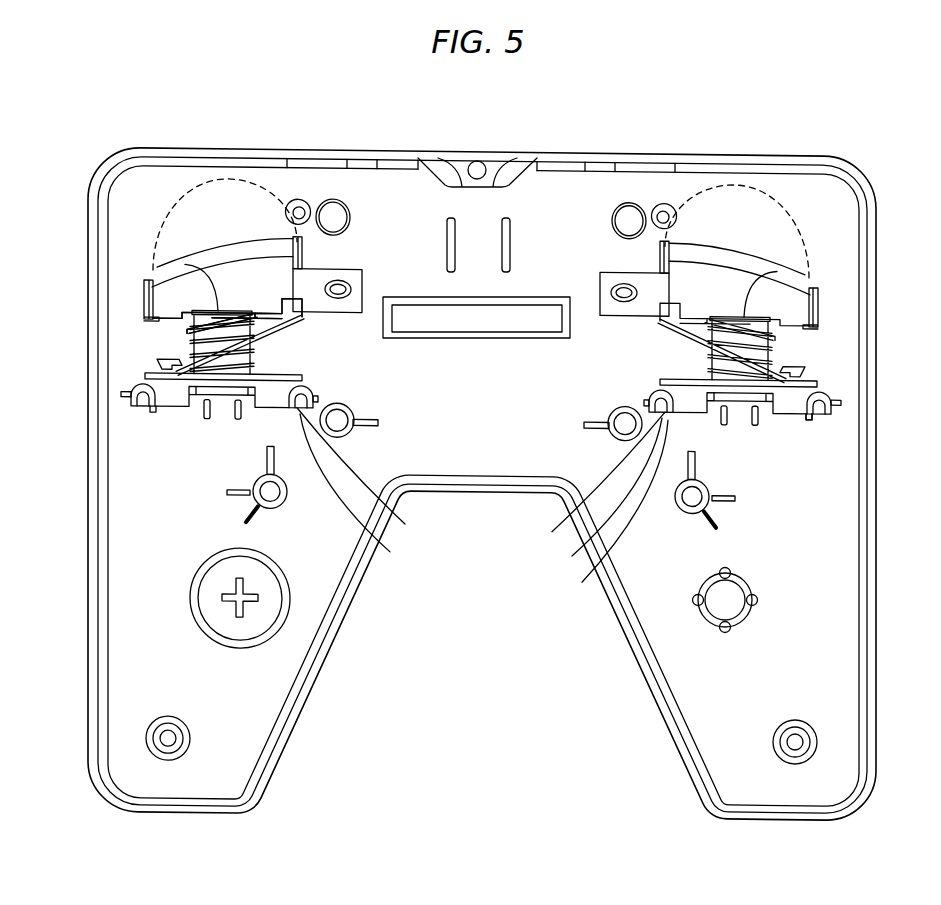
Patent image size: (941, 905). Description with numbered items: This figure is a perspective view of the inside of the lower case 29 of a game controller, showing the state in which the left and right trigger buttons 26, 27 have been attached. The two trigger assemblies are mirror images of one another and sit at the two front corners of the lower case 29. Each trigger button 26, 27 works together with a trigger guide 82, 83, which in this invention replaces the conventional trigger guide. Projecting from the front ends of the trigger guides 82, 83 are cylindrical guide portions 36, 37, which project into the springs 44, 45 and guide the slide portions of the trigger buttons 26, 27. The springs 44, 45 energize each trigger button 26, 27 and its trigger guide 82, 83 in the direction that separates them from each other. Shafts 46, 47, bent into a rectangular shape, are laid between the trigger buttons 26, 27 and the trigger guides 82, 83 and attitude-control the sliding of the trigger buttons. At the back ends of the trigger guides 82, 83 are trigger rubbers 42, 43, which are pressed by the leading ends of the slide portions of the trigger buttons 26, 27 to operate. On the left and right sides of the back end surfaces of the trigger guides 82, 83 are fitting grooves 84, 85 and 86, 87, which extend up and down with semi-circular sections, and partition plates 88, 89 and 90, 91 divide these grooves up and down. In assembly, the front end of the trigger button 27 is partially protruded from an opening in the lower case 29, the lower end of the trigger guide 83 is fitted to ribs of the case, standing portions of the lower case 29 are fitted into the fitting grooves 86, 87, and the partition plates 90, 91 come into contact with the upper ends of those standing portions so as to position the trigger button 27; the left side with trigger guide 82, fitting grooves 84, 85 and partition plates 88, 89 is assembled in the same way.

The trigger button 26 is at (200, 180).
The trigger button 27 is at (717, 180).
The lower case 29 is at (489, 146).
The cylindrical guide portion 36 is at (160, 266).
The spring 45 is at (812, 292).
The spring 44 is at (190, 343).
The cylindrical guide portion 37 is at (773, 334).
The shaft 46 is at (188, 354).
The shaft 47 is at (697, 335).
The trigger guide 82 is at (172, 406).
The trigger rubber 43 is at (766, 402).
The fitting groove 84 is at (141, 400).
The fitting groove 87 is at (825, 398).
The partition plate 88 is at (149, 407).
The partition plate 91 is at (824, 408).
The trigger rubber 42 is at (232, 409).
The partition plate 89 is at (361, 474).
The fitting groove 85 is at (355, 491).
The fitting groove 86 is at (596, 478).
The partition plate 90 is at (603, 494).
The trigger guide 83 is at (611, 508).